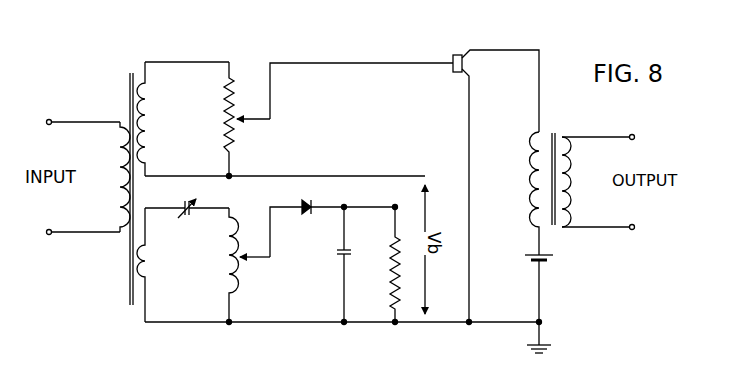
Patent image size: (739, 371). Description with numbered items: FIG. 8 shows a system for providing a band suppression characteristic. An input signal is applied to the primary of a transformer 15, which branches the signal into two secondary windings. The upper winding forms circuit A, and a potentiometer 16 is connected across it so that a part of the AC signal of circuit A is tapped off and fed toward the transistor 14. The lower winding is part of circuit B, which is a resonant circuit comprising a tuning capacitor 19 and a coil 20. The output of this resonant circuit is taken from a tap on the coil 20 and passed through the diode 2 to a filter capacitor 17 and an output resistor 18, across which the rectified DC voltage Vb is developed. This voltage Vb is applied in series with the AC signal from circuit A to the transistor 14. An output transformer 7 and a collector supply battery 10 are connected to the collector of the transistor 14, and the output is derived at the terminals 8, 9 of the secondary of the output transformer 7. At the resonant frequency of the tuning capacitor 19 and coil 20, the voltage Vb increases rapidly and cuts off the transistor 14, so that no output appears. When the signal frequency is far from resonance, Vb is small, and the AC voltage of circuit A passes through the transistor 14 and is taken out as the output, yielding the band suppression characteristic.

The diode 2 is at (308, 215).
The output transformer 7 is at (563, 134).
The output terminal 8 is at (634, 135).
The output terminal 9 is at (634, 229).
The collector supply battery 10 is at (553, 257).
The transistor 14 is at (458, 55).
The transformer 15 is at (126, 126).
The potentiometer 16 is at (232, 93).
The filter capacitor 17 is at (333, 264).
The output resistor 18 is at (392, 280).
The tuning capacitor 19 is at (187, 219).
The coil 20 is at (236, 286).
The circuit A is at (190, 115).